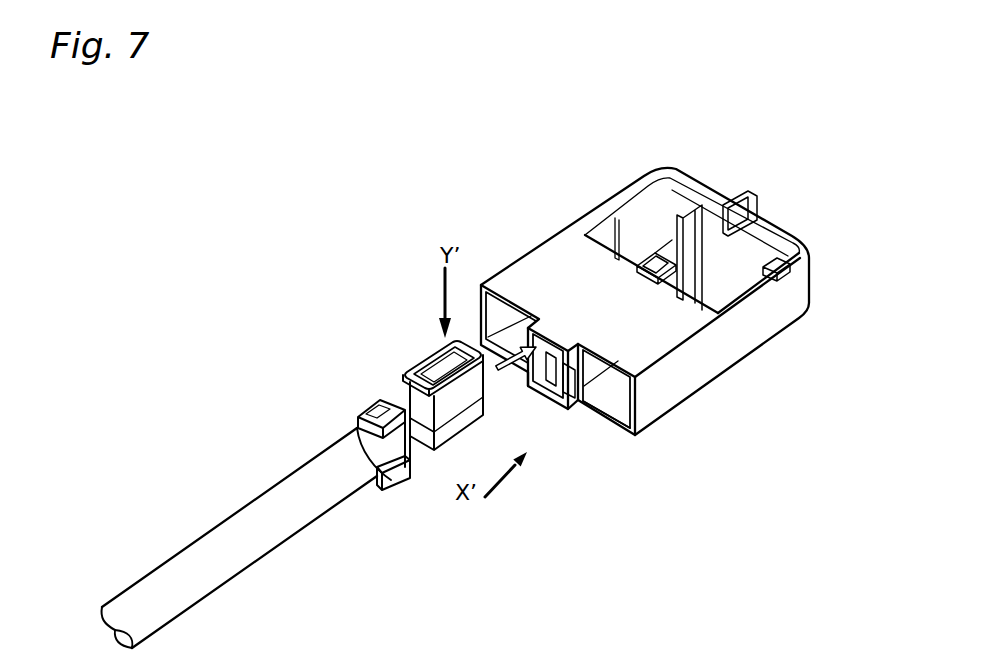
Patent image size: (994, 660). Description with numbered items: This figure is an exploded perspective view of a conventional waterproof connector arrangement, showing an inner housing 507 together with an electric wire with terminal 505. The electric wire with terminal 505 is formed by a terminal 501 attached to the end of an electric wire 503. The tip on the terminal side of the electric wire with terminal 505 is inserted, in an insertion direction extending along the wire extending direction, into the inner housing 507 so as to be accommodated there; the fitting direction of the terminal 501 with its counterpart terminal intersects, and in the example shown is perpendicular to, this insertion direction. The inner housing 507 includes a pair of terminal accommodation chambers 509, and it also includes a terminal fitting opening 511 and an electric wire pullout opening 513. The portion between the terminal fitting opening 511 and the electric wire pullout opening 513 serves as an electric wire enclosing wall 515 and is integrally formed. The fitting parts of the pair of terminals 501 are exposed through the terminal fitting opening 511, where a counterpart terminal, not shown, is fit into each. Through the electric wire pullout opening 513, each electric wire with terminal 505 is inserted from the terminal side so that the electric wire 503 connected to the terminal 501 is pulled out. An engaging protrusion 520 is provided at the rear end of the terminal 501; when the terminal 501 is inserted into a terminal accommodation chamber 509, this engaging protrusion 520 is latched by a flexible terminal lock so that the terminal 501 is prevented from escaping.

The terminal 501 is at (404, 373).
The electric wire 503 is at (176, 563).
The electric wire with terminal 505 is at (243, 485).
The inner housing 507 is at (635, 277).
The terminal accommodation chamber 509 is at (662, 208).
The terminal fitting opening 511 is at (750, 286).
The electric wire pullout opening 513 is at (631, 407).
The electric wire enclosing wall 515 is at (547, 260).
The engaging protrusion 520 is at (428, 432).